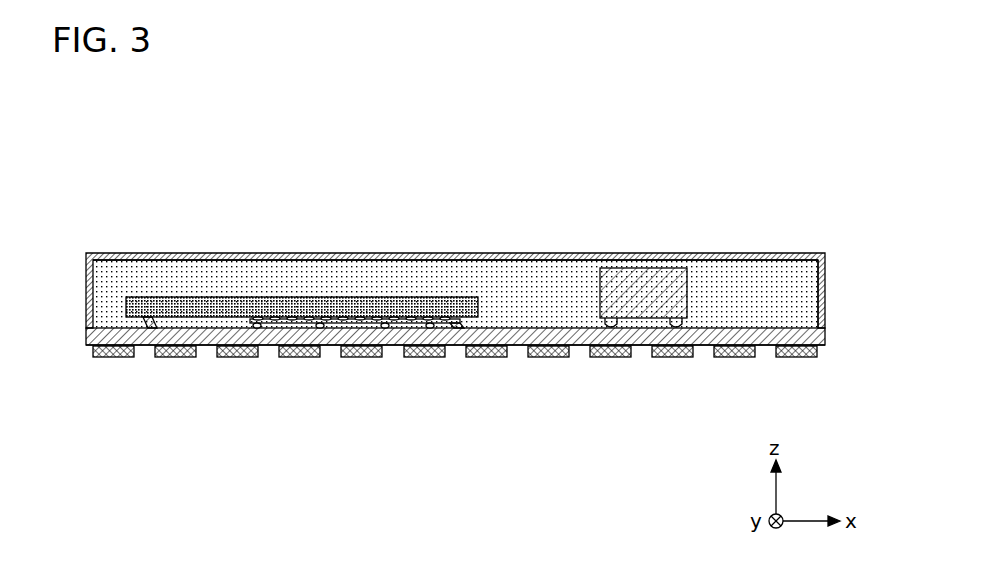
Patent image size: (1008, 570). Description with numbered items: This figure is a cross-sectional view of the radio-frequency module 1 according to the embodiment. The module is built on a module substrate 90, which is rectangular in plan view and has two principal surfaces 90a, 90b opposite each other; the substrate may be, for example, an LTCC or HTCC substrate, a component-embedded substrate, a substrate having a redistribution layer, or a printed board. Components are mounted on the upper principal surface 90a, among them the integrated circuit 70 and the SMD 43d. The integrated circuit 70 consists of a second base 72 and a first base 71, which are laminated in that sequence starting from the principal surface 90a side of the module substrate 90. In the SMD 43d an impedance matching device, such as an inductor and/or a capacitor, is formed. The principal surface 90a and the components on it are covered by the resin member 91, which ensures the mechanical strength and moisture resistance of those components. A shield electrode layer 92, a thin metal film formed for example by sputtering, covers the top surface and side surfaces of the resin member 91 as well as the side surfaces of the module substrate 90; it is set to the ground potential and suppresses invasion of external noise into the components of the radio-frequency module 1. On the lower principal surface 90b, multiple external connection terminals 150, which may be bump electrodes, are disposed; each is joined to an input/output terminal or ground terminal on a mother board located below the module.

The radio-frequency module 1 is at (796, 153).
The shield electrode layer 92 is at (735, 253).
The resin member 91 is at (787, 280).
The principal surface 90a is at (810, 326).
The module substrate 90 is at (825, 329).
The principal surface 90b is at (770, 345).
The external connection terminals 150 is at (237, 358).
The integrated circuit 70 is at (428, 207).
The first base 71 is at (382, 298).
The second base 72 is at (330, 318).
The SMD 43d is at (646, 267).